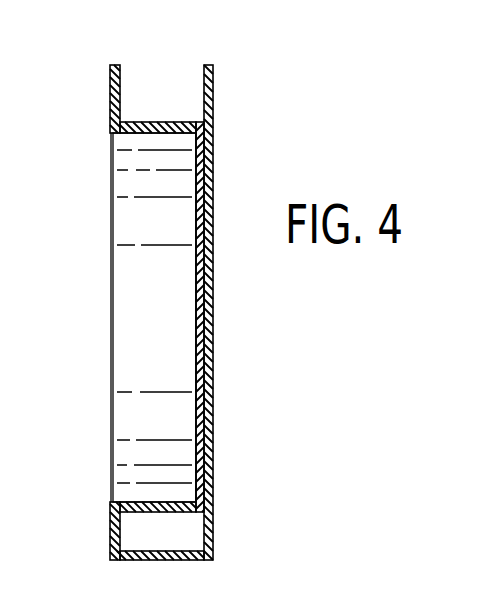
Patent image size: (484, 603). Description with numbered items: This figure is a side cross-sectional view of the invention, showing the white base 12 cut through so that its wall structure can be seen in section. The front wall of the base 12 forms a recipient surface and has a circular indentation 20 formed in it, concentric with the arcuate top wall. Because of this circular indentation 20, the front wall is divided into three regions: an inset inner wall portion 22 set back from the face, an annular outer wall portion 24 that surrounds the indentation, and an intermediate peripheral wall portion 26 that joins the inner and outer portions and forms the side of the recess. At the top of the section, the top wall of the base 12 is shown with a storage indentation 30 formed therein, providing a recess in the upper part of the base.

The white base 12 is at (214, 130).
The circular indentation 20 is at (196, 286).
The inset inner wall portion 22 is at (196, 360).
The annular outer wall portion 24 is at (110, 90).
The intermediate peripheral wall portion 26 is at (121, 410).
The storage indentation 30 is at (150, 122).